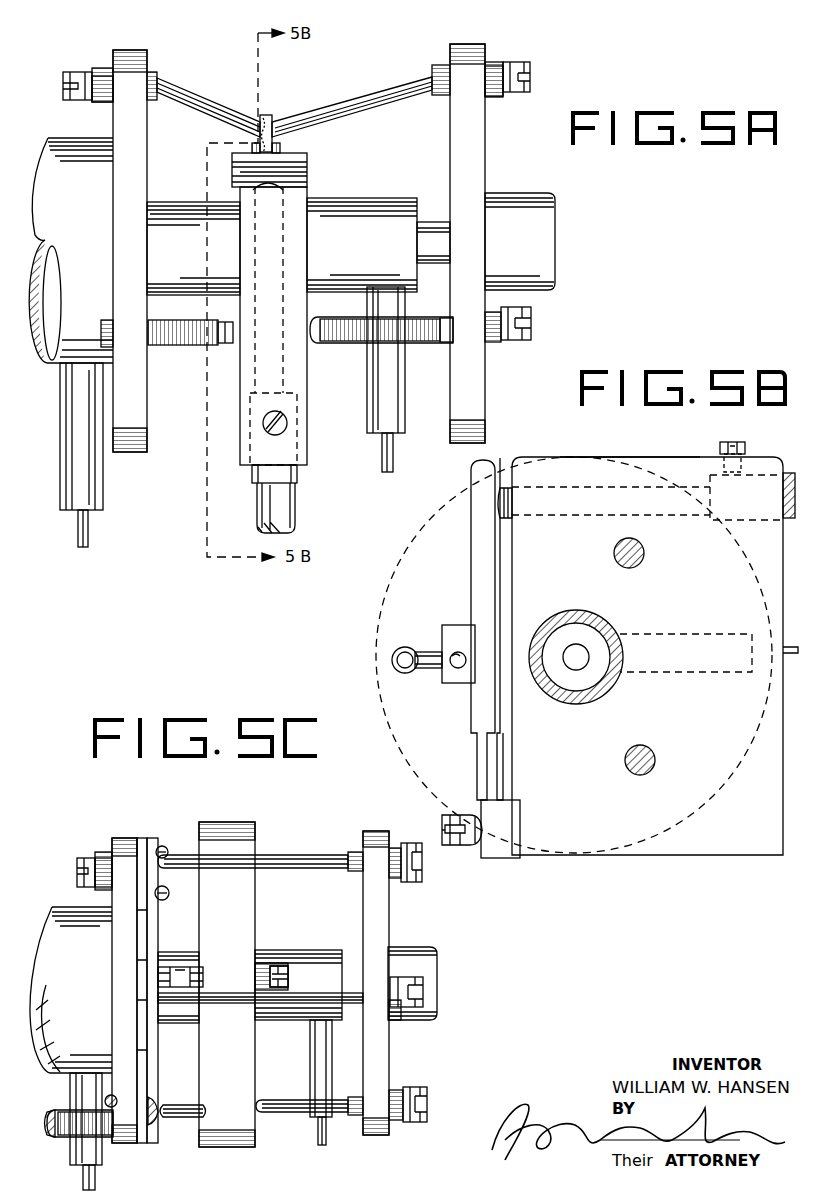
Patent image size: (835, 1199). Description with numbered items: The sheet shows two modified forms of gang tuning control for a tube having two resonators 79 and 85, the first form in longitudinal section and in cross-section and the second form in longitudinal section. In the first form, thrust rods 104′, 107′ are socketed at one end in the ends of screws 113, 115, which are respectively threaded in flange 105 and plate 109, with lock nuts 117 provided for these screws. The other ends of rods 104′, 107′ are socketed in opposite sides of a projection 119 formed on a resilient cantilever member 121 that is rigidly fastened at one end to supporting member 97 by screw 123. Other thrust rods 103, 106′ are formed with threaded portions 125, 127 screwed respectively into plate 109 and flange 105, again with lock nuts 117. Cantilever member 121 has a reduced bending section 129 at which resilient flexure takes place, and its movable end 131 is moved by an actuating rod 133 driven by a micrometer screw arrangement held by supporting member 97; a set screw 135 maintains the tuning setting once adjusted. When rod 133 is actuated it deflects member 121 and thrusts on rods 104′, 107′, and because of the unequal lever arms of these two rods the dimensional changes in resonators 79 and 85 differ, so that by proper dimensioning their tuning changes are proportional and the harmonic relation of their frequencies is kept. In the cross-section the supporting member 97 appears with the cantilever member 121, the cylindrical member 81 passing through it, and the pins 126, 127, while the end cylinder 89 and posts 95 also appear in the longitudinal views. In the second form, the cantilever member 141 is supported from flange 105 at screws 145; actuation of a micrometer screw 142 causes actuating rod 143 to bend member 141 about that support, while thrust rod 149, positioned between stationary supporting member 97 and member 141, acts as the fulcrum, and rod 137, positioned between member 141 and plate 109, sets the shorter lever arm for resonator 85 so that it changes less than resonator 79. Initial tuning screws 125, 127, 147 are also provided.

In FIG. 5A, the resonator 79 is at (51, 140).
In FIG. 5C, the resonator 79 is at (64, 907).
In FIG. 5A, the cylindrical member 81 is at (168, 202).
In FIG. 5B, the cylindrical member 81 is at (606, 627).
In FIG. 5C, the cylindrical member 81 is at (175, 953).
In FIG. 5A, the resonator 85 is at (394, 198).
In FIG. 5C, the resonator 85 is at (319, 952).
In FIG. 5A, the end cylinder 89 is at (497, 193).
In FIG. 5C, the end cylinder 89 is at (437, 959).
In FIG. 5A, the support post 95 is at (103, 508).
In FIG. 5A, the supporting member 97 is at (240, 439).
In FIG. 5B, the supporting member 97 is at (667, 457).
In FIG. 5C, the supporting member 97 is at (233, 822).
In FIG. 5A, the thrust rod 103 is at (226, 349).
In FIG. 5C, the thrust rod 103 is at (174, 855).
In FIG. 5A, the thrust rod 104′ is at (193, 81).
In FIG. 5A, the flange 105 is at (125, 50).
In FIG. 5C, the flange 105 is at (120, 838).
In FIG. 5A, the thrust rod 106′ is at (318, 346).
In FIG. 5C, the thrust rod 106′ is at (294, 856).
In FIG. 5A, the thrust rod 107′ is at (370, 94).
In FIG. 5B, the thrust rod 107′ is at (434, 668).
In FIG. 5A, the plate 109 is at (460, 44).
In FIG. 5B, the plate 109 is at (378, 594).
In FIG. 5C, the plate 109 is at (367, 831).
In FIG. 5A, the screw 113 is at (76, 74).
In FIG. 5A, the screw 115 is at (525, 61).
In FIG. 5B, the screw 115 is at (405, 649).
In FIG. 5A, the lock nut 117 is at (101, 107).
In FIG. 5C, the lock nut 117 is at (101, 850).
In FIG. 5A, the projection 119 is at (264, 115).
In FIG. 5B, the projection 119 is at (442, 625).
In FIG. 5A, the resilient cantilever member 121 is at (306, 158).
In FIG. 5B, the resilient cantilever member 121 is at (472, 541).
In FIG. 5B, the screw 123 is at (454, 848).
In FIG. 5A, the threaded portion 125 is at (418, 344).
In FIG. 5C, the threaded portion 125 is at (414, 880).
In FIG. 5B, the pin 126 is at (655, 760).
In FIG. 5A, the threaded portion 127 is at (168, 346).
In FIG. 5B, the threaded portion 127 is at (642, 562).
In FIG. 5C, the threaded portion 127 is at (82, 858).
In FIG. 5B, the reduced bending section 129 is at (497, 762).
In FIG. 5B, the movable end 131 is at (499, 470).
In FIG. 5A, the actuating rod 133 is at (297, 496).
In FIG. 5B, the actuating rod 133 is at (608, 455).
In FIG. 5A, the set screw 135 is at (265, 428).
In FIG. 5B, the set screw 135 is at (745, 448).
In FIG. 5C, the rod 137 is at (297, 993).
In FIG. 5C, the cantilever member 141 is at (158, 1080).
In FIG. 5C, the micrometer screw 142 is at (68, 1139).
In FIG. 5C, the actuating rod 143 is at (120, 1115).
In FIG. 5C, the screws 145 is at (162, 847).
In FIG. 5C, the screw 147 is at (423, 993).
In FIG. 5C, the thrust rod 149 is at (185, 966).